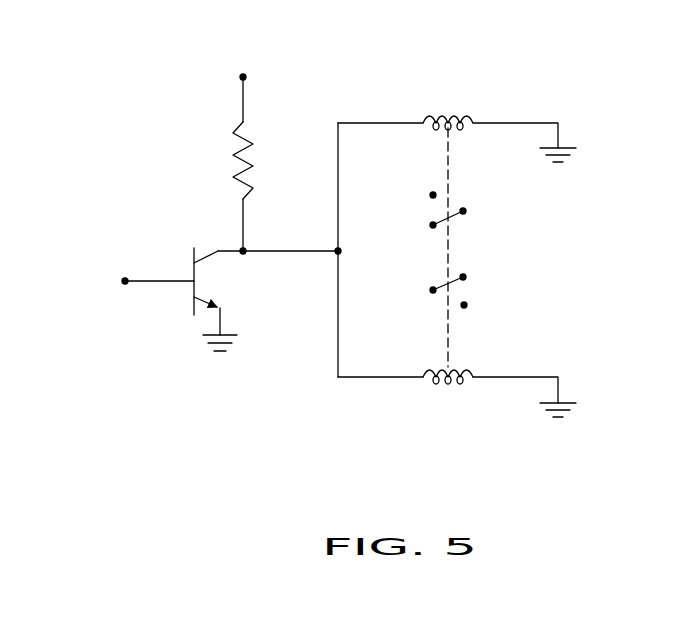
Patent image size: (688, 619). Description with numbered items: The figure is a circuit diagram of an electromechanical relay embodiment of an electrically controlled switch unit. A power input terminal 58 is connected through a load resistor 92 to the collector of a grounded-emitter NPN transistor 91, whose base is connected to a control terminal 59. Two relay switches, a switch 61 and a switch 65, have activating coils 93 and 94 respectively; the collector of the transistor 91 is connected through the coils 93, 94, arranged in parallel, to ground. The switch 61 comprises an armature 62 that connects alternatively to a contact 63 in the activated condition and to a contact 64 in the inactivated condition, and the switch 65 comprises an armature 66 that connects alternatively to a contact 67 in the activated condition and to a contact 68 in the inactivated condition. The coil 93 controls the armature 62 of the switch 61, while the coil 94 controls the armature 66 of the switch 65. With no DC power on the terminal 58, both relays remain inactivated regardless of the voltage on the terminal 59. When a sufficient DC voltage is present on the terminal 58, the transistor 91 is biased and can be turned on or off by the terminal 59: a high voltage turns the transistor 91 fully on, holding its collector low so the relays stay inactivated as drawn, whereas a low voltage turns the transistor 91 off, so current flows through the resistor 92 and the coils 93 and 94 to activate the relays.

The power input terminal 58 is at (243, 77).
The control terminal 59 is at (125, 281).
The switch 61 is at (536, 181).
The armature 62 is at (453, 216).
The contact 63 is at (433, 195).
The contact 64 is at (433, 225).
The switch 65 is at (534, 295).
The armature 66 is at (448, 286).
The contact 67 is at (464, 305).
The contact 68 is at (463, 277).
The NPN transistor 91 is at (220, 250).
The load resistor 92 is at (252, 140).
The activating coil 93 is at (455, 114).
The activating coil 94 is at (450, 383).